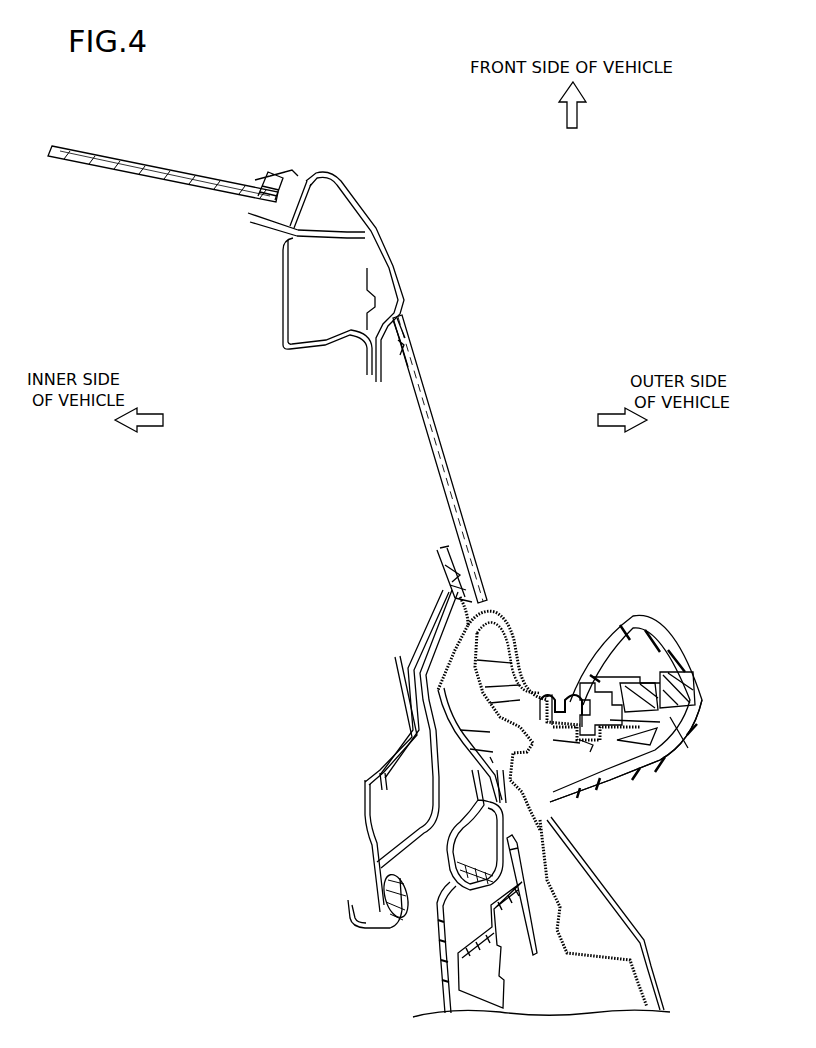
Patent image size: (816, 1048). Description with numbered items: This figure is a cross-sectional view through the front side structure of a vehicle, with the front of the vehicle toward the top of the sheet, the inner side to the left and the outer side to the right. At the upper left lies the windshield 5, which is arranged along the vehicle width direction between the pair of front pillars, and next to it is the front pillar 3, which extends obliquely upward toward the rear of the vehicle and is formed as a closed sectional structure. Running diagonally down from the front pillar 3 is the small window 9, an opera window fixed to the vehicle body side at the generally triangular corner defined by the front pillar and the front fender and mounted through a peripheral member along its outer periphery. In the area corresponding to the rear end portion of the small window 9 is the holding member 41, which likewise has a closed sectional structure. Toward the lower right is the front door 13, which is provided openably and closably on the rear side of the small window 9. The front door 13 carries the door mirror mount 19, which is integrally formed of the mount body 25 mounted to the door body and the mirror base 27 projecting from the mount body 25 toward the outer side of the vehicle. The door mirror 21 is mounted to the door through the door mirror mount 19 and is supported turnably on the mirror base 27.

The front pillar 3 is at (372, 227).
The windshield 5 is at (150, 167).
The small window 9 is at (442, 453).
The front door 13 is at (630, 925).
The door mirror mount 19 is at (531, 641).
The door mirror 21 is at (682, 650).
The mount body 25 is at (503, 622).
The mirror base 27 is at (637, 770).
The holding member 41 is at (355, 807).